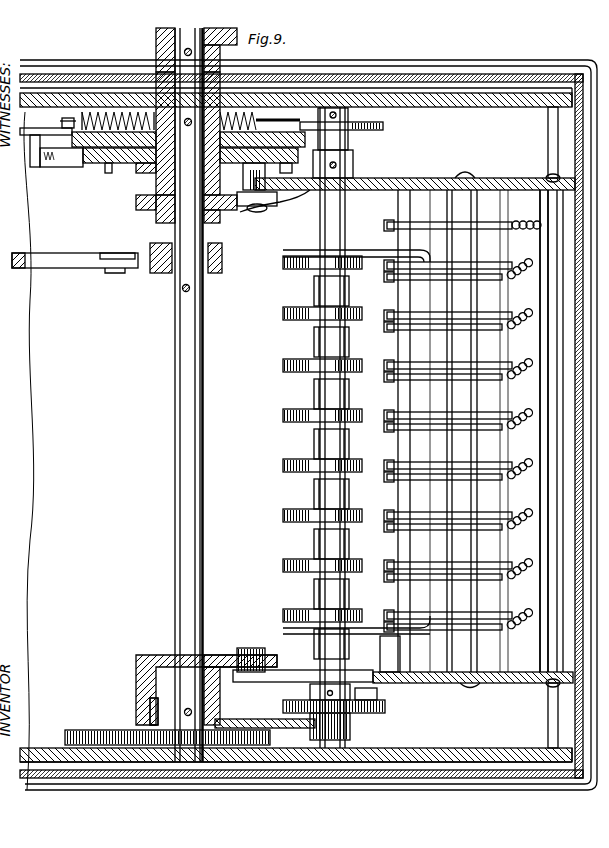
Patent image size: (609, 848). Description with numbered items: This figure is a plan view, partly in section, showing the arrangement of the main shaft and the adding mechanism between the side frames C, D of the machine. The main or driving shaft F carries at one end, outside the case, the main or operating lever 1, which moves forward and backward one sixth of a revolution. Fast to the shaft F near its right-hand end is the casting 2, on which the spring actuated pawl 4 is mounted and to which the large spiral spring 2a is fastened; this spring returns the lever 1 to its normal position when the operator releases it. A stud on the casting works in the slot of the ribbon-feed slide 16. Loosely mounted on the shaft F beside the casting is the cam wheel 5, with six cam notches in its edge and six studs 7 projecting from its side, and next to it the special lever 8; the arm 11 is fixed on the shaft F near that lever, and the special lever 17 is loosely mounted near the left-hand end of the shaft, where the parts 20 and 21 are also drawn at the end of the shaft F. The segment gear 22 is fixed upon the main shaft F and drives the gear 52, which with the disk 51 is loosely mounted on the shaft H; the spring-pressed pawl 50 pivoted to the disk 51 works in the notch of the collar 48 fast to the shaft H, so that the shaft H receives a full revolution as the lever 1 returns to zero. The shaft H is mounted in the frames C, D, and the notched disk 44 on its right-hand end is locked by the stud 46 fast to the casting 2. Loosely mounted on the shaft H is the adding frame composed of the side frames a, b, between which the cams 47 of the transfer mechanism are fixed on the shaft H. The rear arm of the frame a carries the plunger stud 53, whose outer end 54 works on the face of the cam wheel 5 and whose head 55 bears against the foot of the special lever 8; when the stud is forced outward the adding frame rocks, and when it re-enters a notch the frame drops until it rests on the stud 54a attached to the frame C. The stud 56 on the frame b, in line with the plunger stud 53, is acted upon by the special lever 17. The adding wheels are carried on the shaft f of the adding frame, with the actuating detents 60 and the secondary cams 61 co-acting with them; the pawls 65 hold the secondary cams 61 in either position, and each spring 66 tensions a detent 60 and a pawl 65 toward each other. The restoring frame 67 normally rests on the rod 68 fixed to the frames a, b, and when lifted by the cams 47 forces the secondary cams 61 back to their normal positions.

The main or operating lever 1 is at (156, 39).
The casting 2 is at (250, 142).
The large spiral spring 2a is at (93, 110).
The spring actuated pawl 4 is at (55, 165).
The cam wheel 5 is at (160, 168).
The studs 7 is at (108, 167).
The special lever 8 is at (158, 214).
The arm 11 is at (100, 262).
The ribbon-feed slide 16 is at (58, 131).
The special lever 17 is at (204, 669).
The key 20 is at (152, 703).
The gear wheel 21 is at (75, 730).
The segment gear 22 is at (258, 720).
The notched disk 44 is at (385, 127).
The stud 46 is at (346, 141).
The cams 47 is at (283, 263).
The collar 48 is at (328, 693).
The spring-pressed pawl 50 is at (378, 698).
The disk 51 is at (386, 707).
The gear 52 is at (352, 727).
The plunger stud 53 is at (248, 208).
The outer end of plunger stud 54 is at (250, 178).
The stud 54a is at (553, 175).
The inner end or head of plunger stud 55 is at (275, 208).
The stud 56 is at (255, 652).
The actuating detents 60 is at (488, 222).
The secondary cams 61 is at (490, 278).
The pawls 65 is at (545, 255).
The spring 66 is at (523, 437).
The restoring frame 67 is at (372, 250).
The rod 68 is at (400, 655).
The side frame C is at (469, 107).
The side frame D is at (462, 749).
The main or driving shaft F is at (178, 348).
The shaft H is at (326, 242).
The side frame of adding frame a is at (433, 178).
The side frame of adding frame b is at (430, 683).
The shaft of adding frame f is at (470, 686).